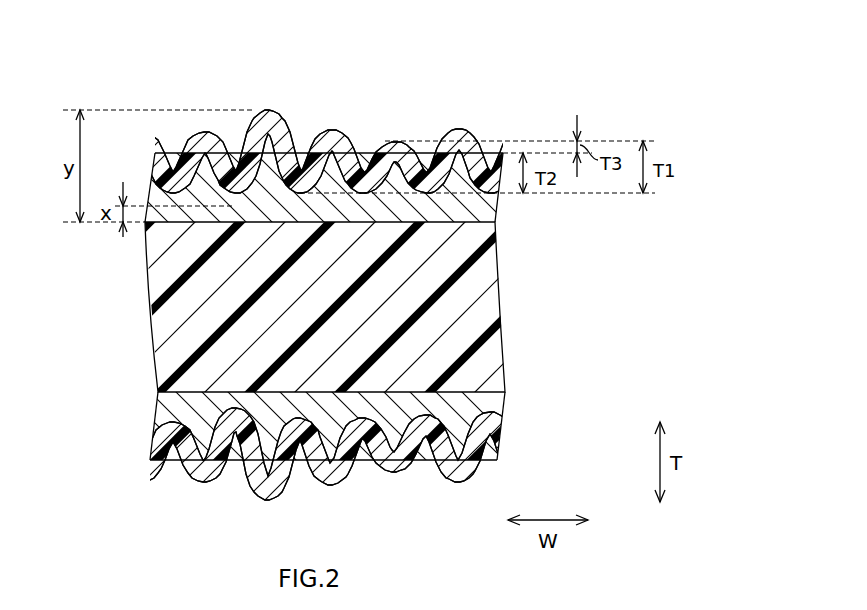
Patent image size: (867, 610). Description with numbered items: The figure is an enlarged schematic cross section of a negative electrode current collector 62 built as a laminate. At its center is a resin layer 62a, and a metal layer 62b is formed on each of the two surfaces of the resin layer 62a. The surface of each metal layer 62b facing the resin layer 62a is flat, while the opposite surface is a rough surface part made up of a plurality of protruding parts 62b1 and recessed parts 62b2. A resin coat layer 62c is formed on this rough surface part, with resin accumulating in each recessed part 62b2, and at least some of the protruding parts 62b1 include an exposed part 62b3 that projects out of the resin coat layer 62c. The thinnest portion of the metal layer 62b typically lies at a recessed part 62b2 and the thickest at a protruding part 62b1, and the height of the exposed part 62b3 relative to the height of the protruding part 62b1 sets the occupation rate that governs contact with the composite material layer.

The negative electrode current collector 62 is at (565, 37).
The resin layer 62a is at (487, 303).
The metal layer 62b is at (330, 138).
The protruding part 62b1 is at (253, 108).
The recessed part 62b2 is at (343, 148).
The exposed part 62b3 is at (296, 140).
The resin coat layer 62c is at (362, 152).